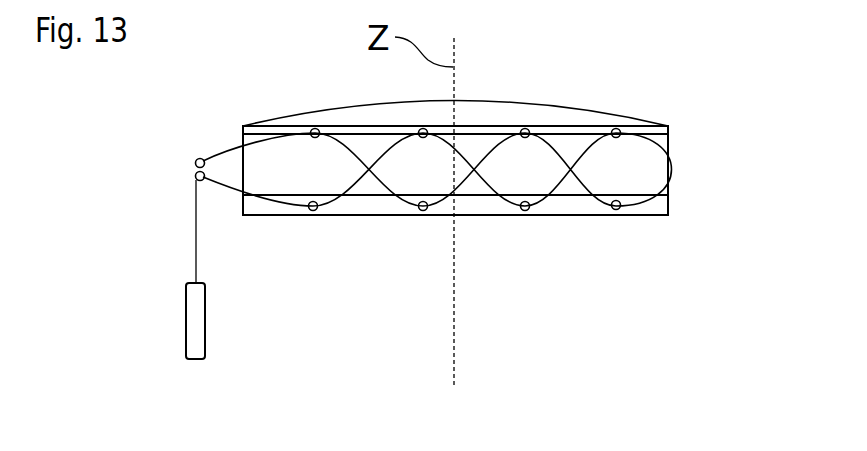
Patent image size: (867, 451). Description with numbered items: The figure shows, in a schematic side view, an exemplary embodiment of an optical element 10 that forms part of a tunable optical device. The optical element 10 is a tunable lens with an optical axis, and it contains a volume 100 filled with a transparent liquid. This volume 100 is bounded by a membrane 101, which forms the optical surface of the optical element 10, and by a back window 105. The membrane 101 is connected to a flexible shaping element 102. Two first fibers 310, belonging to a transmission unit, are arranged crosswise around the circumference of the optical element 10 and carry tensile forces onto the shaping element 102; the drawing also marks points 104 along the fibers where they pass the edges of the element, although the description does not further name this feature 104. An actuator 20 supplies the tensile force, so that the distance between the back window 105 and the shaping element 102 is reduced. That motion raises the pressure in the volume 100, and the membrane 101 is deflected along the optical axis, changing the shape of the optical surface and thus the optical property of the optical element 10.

The optical element 10 is at (692, 188).
The actuator 20 is at (192, 328).
The volume 100 is at (325, 168).
The membrane 101 is at (540, 103).
The shaping element 102 is at (668, 134).
The attachment points / eyelets 104 is at (423, 211).
The back window 105 is at (497, 202).
The first fibers 310 is at (228, 153).